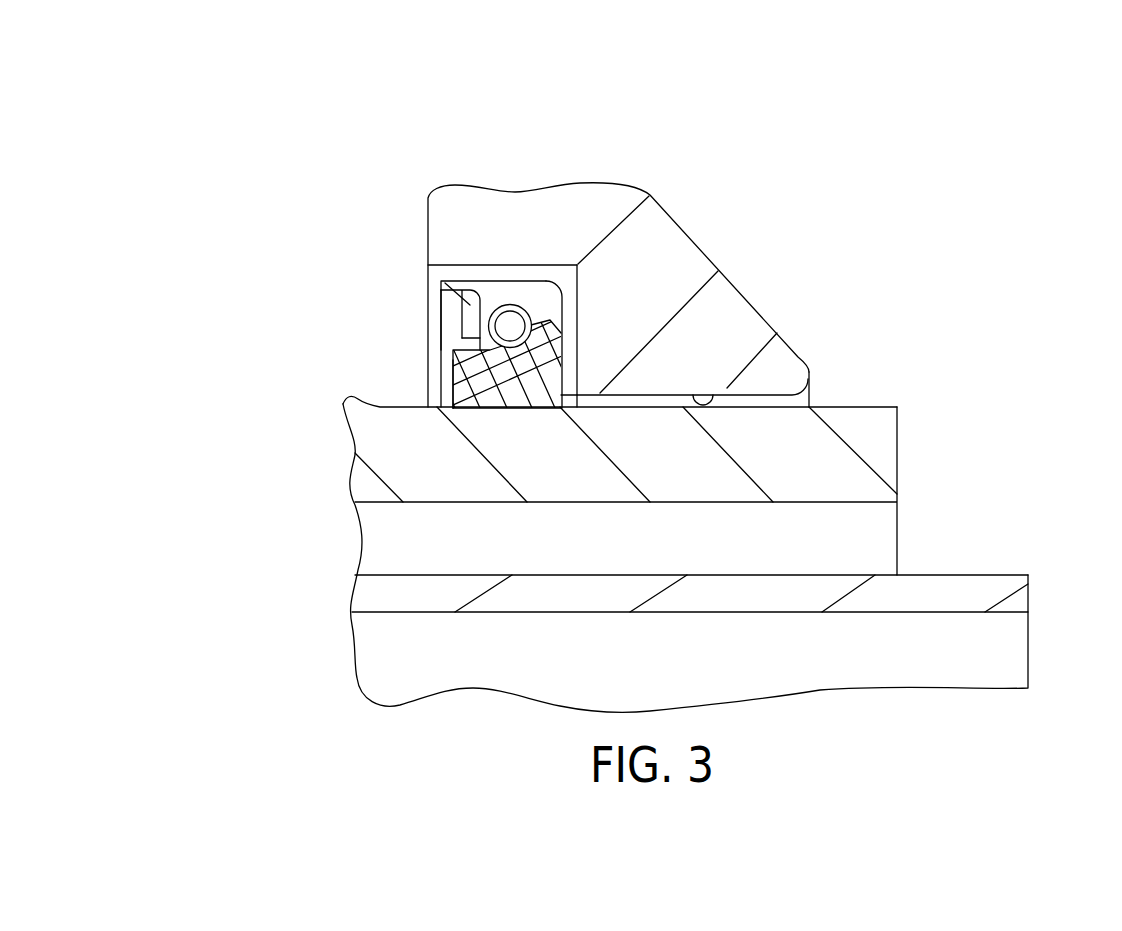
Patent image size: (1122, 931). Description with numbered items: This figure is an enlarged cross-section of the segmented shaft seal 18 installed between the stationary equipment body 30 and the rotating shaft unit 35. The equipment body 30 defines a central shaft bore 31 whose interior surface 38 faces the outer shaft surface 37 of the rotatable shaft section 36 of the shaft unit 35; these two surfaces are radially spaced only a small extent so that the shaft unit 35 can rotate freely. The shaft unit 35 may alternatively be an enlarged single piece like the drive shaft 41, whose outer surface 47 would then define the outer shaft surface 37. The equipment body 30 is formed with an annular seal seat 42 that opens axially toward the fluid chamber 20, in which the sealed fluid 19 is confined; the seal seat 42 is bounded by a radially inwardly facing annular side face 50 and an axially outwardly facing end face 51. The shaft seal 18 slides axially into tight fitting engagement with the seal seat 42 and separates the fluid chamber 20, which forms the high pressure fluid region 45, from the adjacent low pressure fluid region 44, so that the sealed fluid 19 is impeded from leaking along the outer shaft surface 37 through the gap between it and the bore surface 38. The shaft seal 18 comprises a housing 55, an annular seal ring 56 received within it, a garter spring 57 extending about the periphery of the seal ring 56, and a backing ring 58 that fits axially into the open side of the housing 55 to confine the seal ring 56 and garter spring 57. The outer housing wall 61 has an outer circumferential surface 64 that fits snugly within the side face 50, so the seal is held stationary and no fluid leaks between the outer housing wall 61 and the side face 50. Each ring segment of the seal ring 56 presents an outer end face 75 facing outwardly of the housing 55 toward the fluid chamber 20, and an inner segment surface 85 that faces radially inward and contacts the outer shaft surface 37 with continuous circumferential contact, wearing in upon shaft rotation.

The segmented shaft seal 18 is at (538, 265).
The sealed fluid 19 is at (345, 327).
The fluid chamber 20 is at (355, 234).
The equipment body 30 is at (663, 187).
The shaft bore 31 is at (840, 372).
The shaft unit 35 is at (350, 637).
The shaft section 36 is at (897, 445).
The outer shaft surface 37 is at (860, 405).
The interior surface of the shaft bore 38 is at (717, 398).
The drive shaft 41 is at (1028, 575).
The annular seal seat 42 is at (578, 288).
The fluid region 44 is at (1013, 222).
The high pressure fluid region 45 is at (215, 239).
The outer surface of the drive shaft 47 is at (925, 575).
The annular side face 50 is at (438, 264).
The end face 51 is at (578, 313).
The housing 55 is at (472, 264).
The seal ring 56 is at (466, 368).
The garter spring 57 is at (515, 256).
The backing ring 58 is at (470, 320).
The outer housing wall 61 is at (450, 264).
The outer circumferential surface 64 is at (498, 264).
The outer end face 75 is at (458, 390).
The inner segment surface 85 is at (530, 408).